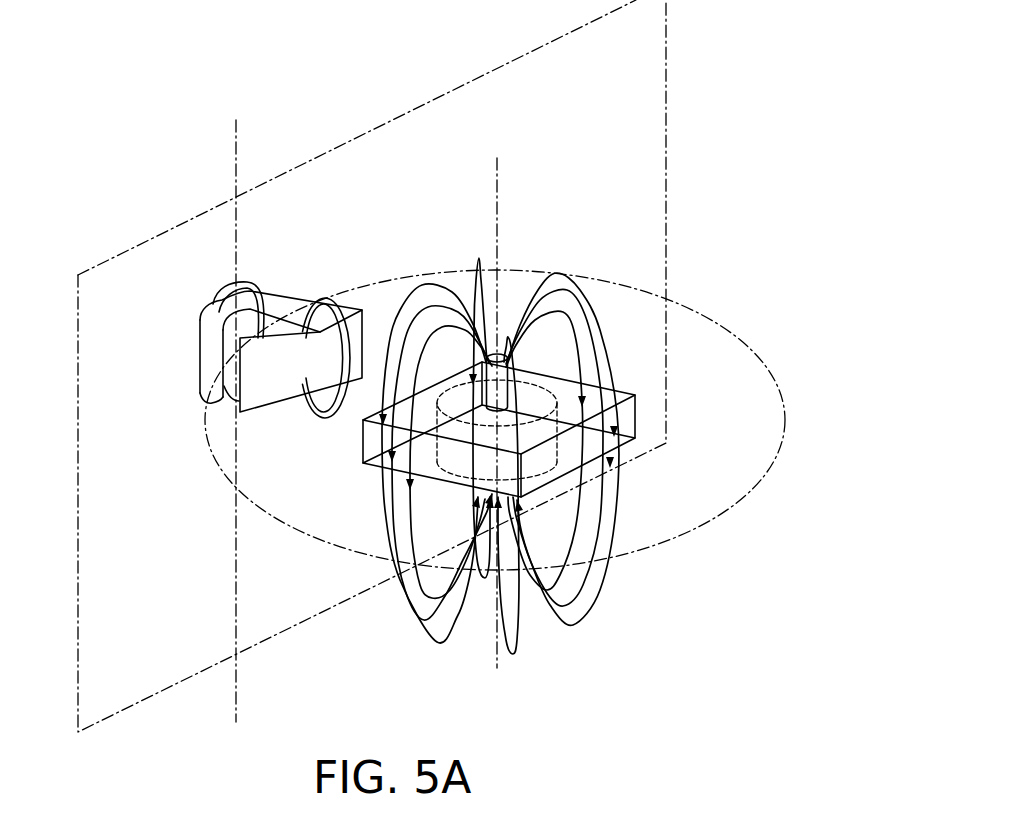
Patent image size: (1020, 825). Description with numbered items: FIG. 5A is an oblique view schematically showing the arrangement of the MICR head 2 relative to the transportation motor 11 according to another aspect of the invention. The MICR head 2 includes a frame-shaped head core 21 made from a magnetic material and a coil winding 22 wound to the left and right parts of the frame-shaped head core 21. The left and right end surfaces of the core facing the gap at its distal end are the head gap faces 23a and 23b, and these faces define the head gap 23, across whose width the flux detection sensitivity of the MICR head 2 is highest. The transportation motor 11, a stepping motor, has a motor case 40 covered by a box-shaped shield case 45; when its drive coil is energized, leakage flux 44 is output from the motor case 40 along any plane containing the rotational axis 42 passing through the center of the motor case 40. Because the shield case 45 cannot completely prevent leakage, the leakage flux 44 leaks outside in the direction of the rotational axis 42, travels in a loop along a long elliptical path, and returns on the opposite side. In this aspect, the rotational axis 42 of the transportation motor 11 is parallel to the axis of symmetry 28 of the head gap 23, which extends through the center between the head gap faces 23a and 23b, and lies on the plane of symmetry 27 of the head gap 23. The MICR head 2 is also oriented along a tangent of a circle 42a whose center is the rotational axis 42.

The MICR head 2 is at (212, 278).
The frame-shaped head core 21 is at (263, 283).
The coil winding 22 is at (216, 303).
The head gap 23 is at (210, 412).
The head gap face 23a is at (226, 346).
The head gap face 23b is at (220, 390).
The plane of symmetry 27 is at (350, 134).
The axis of symmetry 28 is at (235, 170).
The rotational axis 42 is at (497, 203).
The circle 42a is at (735, 330).
The leakage flux 44 is at (437, 287).
The transportation motor 11 is at (552, 381).
The motor case 40 is at (557, 384).
The shield case 45 is at (640, 420).